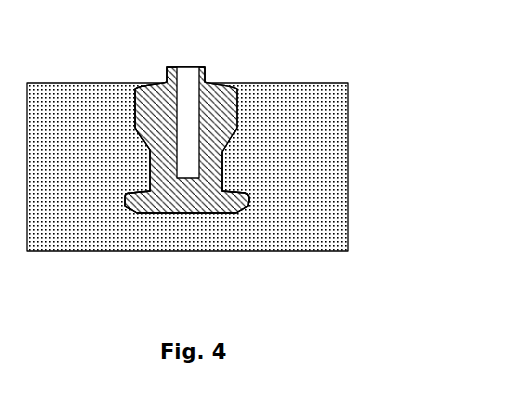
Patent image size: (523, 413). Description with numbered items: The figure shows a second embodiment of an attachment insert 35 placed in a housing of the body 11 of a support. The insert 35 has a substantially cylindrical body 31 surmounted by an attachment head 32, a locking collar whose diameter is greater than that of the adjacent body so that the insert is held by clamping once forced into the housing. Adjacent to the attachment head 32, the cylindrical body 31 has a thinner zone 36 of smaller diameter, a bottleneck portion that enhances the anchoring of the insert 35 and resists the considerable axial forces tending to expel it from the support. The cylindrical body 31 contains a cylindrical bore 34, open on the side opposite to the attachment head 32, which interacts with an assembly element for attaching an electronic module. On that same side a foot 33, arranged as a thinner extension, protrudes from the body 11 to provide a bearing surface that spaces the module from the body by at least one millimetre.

The body 11 is at (88, 97).
The cylindrical body 31 is at (263, 122).
The attachment head 32 is at (232, 202).
The foot 33 is at (204, 67).
The cylindrical bore 34 is at (184, 80).
The insert 35 is at (160, 93).
The thinner zone 36 is at (223, 173).